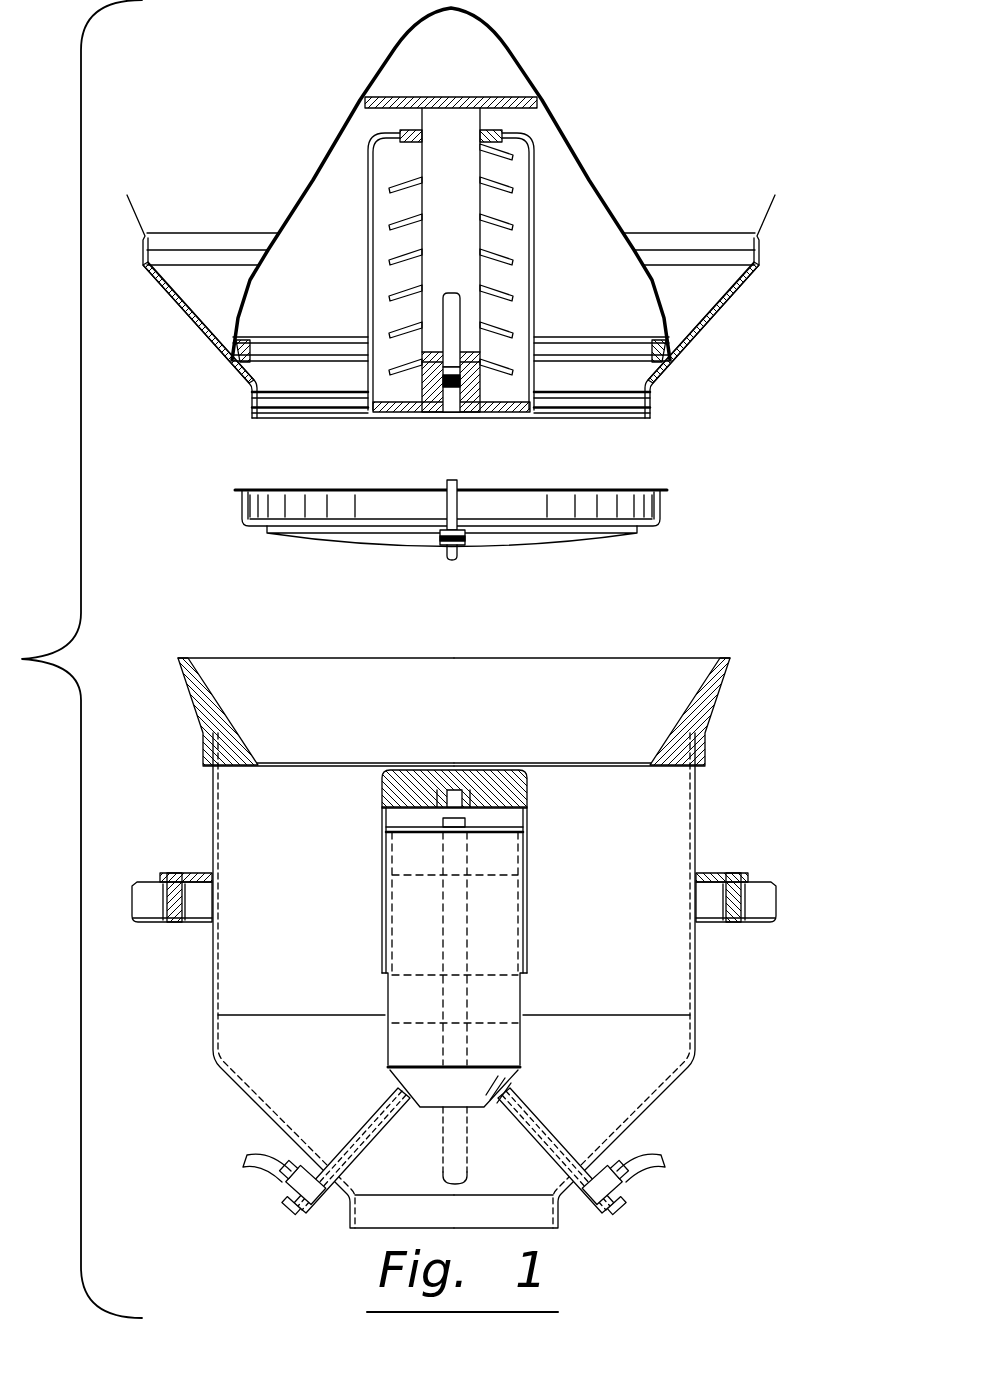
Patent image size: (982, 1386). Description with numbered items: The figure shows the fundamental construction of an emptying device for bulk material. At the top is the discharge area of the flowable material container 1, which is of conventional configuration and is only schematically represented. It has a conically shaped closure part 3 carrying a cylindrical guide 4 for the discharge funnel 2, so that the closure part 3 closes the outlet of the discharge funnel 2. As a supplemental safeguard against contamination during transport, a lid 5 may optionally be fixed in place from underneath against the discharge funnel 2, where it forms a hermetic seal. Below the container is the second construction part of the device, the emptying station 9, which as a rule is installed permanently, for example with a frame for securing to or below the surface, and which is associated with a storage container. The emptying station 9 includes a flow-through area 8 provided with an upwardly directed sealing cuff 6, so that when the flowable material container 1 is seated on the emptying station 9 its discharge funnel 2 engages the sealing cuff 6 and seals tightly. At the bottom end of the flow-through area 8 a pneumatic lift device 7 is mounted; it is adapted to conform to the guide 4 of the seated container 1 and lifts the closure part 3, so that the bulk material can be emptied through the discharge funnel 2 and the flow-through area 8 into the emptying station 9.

The flowable material container 1 is at (761, 560).
The discharge funnel 2 is at (192, 322).
The closure part 3 is at (332, 152).
The cylindrical guide 4 is at (409, 419).
The lid 5 is at (246, 507).
The sealing cuff 6 is at (204, 713).
The pneumatic lift device 7 is at (505, 851).
The flow-through area 8 is at (213, 985).
The emptying station 9 is at (761, 590).